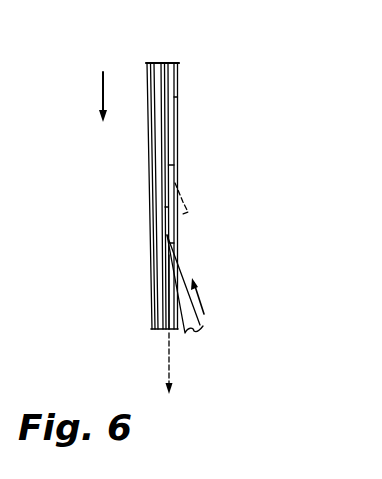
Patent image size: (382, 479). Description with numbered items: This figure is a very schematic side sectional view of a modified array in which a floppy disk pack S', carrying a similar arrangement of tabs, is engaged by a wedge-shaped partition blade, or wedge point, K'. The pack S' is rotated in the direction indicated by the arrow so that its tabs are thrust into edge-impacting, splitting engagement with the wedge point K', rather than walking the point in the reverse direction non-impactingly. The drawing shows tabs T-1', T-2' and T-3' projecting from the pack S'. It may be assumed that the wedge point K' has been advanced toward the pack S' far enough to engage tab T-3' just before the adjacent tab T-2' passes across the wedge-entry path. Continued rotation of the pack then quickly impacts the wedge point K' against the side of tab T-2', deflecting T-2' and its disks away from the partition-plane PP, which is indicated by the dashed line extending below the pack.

The floppy disk pack S' is at (182, 174).
The tab T-1' is at (203, 196).
The tab T-2' is at (169, 189).
The tab T-3' is at (121, 276).
The wedge-shaped partition blade K' is at (205, 289).
The partition-plane PP is at (168, 366).